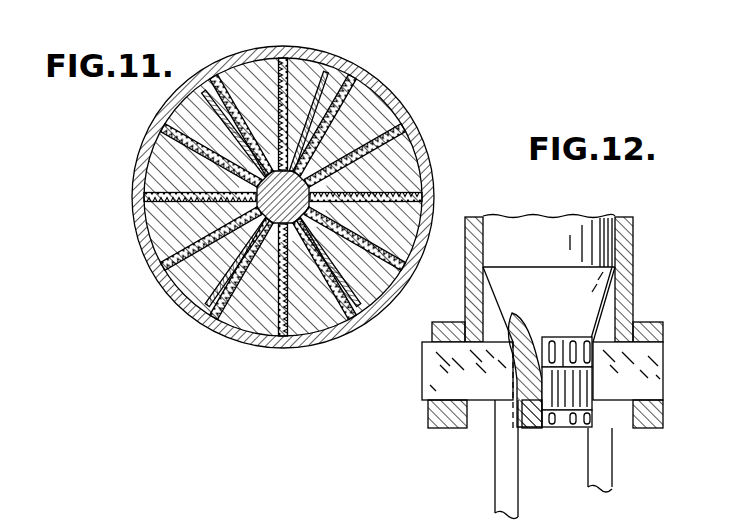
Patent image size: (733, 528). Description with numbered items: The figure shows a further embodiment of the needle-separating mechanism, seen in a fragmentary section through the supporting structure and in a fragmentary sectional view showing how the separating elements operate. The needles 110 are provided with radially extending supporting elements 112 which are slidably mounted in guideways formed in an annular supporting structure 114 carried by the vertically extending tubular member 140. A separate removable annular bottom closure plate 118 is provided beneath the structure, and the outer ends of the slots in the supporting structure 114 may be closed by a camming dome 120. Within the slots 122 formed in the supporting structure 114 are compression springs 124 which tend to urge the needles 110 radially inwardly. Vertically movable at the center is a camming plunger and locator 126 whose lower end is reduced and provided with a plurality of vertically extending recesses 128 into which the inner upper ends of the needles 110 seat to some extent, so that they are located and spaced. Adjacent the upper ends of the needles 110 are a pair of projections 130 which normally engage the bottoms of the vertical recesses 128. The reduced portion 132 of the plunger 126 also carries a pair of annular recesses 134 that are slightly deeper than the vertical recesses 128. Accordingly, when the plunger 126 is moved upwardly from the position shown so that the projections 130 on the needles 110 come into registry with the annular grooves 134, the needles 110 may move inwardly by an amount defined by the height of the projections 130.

In FIG. 11, the needles 110 is at (310, 185).
In FIG. 12, the needles 110 is at (519, 490).
In FIG. 11, the supporting elements 112 is at (345, 167).
In FIG. 12, the supporting elements 112 is at (430, 372).
In FIG. 11, the annular supporting structure 114 is at (377, 105).
In FIG. 12, the annular supporting structure 114 is at (544, 314).
In FIG. 12, the annular bottom closure plate 118 is at (430, 428).
In FIG. 11, the camming dome 120 is at (402, 128).
In FIG. 11, the slots 122 is at (348, 75).
In FIG. 11, the compression springs 124 is at (397, 137).
In FIG. 12, the camming plunger and locator 126 is at (577, 228).
In FIG. 12, the vertically extending recesses 128 is at (565, 428).
In FIG. 12, the projections 130 is at (513, 390).
In FIG. 11, the reduced portion 132 is at (293, 170).
In FIG. 12, the reduced portion 132 is at (540, 430).
In FIG. 12, the annular recesses 134 is at (563, 340).
In FIG. 12, the tubular member 140 is at (628, 255).